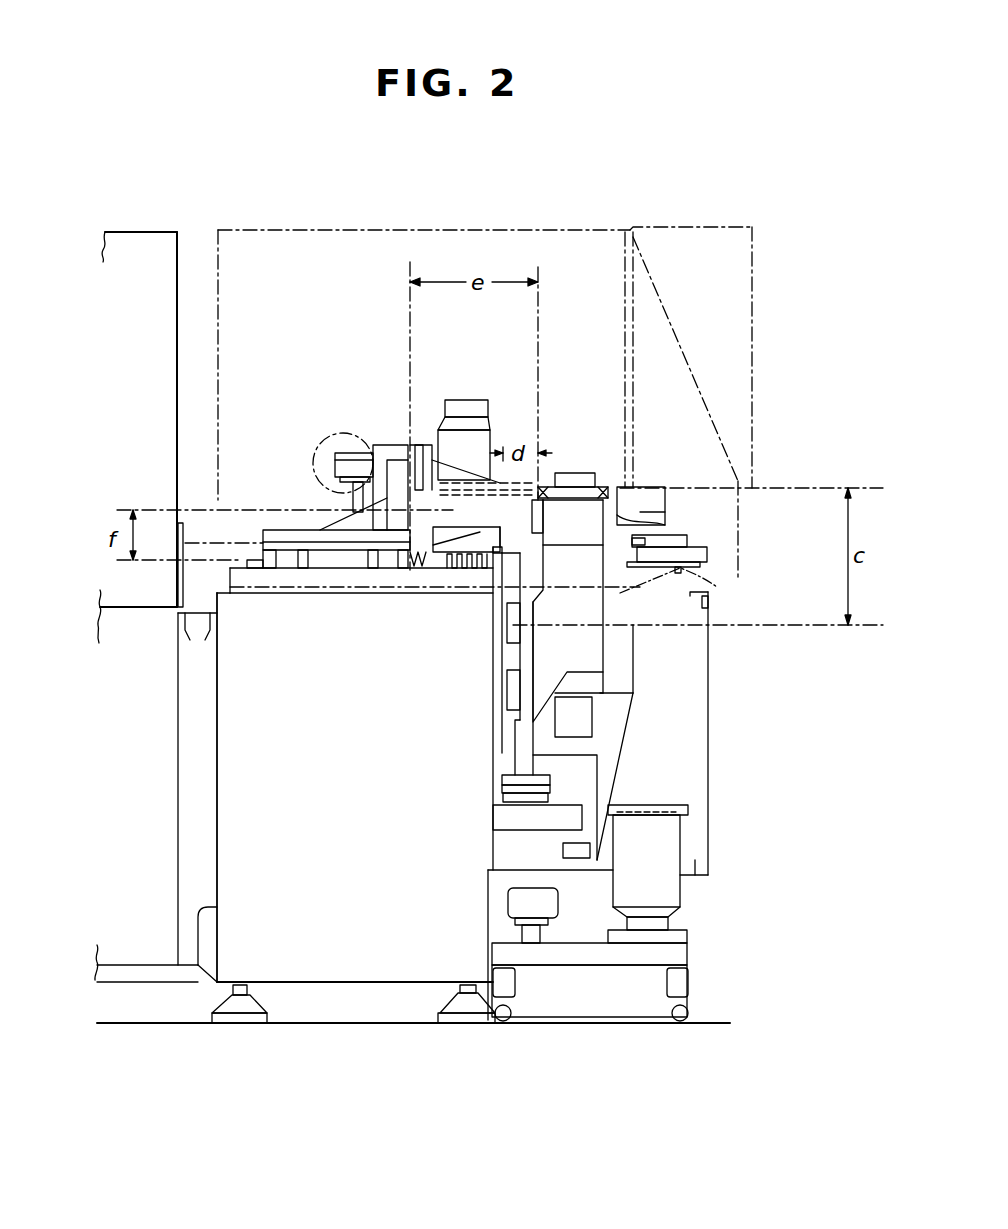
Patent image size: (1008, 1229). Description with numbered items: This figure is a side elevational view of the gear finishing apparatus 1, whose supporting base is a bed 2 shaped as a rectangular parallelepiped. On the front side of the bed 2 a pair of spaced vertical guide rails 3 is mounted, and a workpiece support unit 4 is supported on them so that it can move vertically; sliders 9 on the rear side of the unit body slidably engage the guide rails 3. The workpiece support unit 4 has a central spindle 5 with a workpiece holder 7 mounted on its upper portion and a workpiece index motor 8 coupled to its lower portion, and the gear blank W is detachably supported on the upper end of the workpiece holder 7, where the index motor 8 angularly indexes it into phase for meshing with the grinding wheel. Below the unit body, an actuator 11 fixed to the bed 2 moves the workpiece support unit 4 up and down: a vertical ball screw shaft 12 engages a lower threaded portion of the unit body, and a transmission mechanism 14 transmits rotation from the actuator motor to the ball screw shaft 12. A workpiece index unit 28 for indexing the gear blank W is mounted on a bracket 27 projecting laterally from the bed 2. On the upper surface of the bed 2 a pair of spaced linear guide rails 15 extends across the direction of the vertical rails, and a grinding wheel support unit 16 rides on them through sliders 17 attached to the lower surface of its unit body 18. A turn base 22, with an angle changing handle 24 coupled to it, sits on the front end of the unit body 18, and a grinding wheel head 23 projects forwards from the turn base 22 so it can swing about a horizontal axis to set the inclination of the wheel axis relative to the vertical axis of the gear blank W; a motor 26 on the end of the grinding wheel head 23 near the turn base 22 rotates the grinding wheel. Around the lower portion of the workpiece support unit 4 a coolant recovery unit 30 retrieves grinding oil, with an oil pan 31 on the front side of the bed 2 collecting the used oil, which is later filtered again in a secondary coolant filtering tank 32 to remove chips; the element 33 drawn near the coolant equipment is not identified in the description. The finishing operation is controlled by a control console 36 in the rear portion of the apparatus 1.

The gear finishing apparatus 1 is at (684, 210).
The bed 2 is at (392, 967).
The vertical guide rails 3 is at (508, 593).
The workpiece support unit 4 is at (613, 663).
The central spindle 5 is at (633, 632).
The workpiece holder 7 is at (620, 517).
The workpiece index motor 8 is at (573, 720).
The sliders 9 is at (510, 630).
The actuator 11 is at (555, 788).
The vertical ball screw shaft 12 is at (515, 737).
The transmission mechanism 14 is at (500, 820).
The linear guide rails 15 is at (330, 568).
The grinding wheel support unit 16 is at (380, 440).
The sliders 17 is at (280, 558).
The unit body 18 is at (327, 522).
The turn base 22 is at (400, 445).
The grinding wheel head 23 is at (648, 490).
The angle changing handle 24 is at (327, 437).
The motor 26 is at (477, 403).
The bracket 27 is at (717, 587).
The workpiece index unit 28 is at (630, 545).
The coolant recovery unit 30 is at (697, 980).
The oil pan 31 is at (633, 693).
The secondary coolant filtering tank 32 is at (683, 957).
The drive motor 33 is at (690, 807).
The control console 36 is at (133, 797).
The gear blank W is at (613, 483).